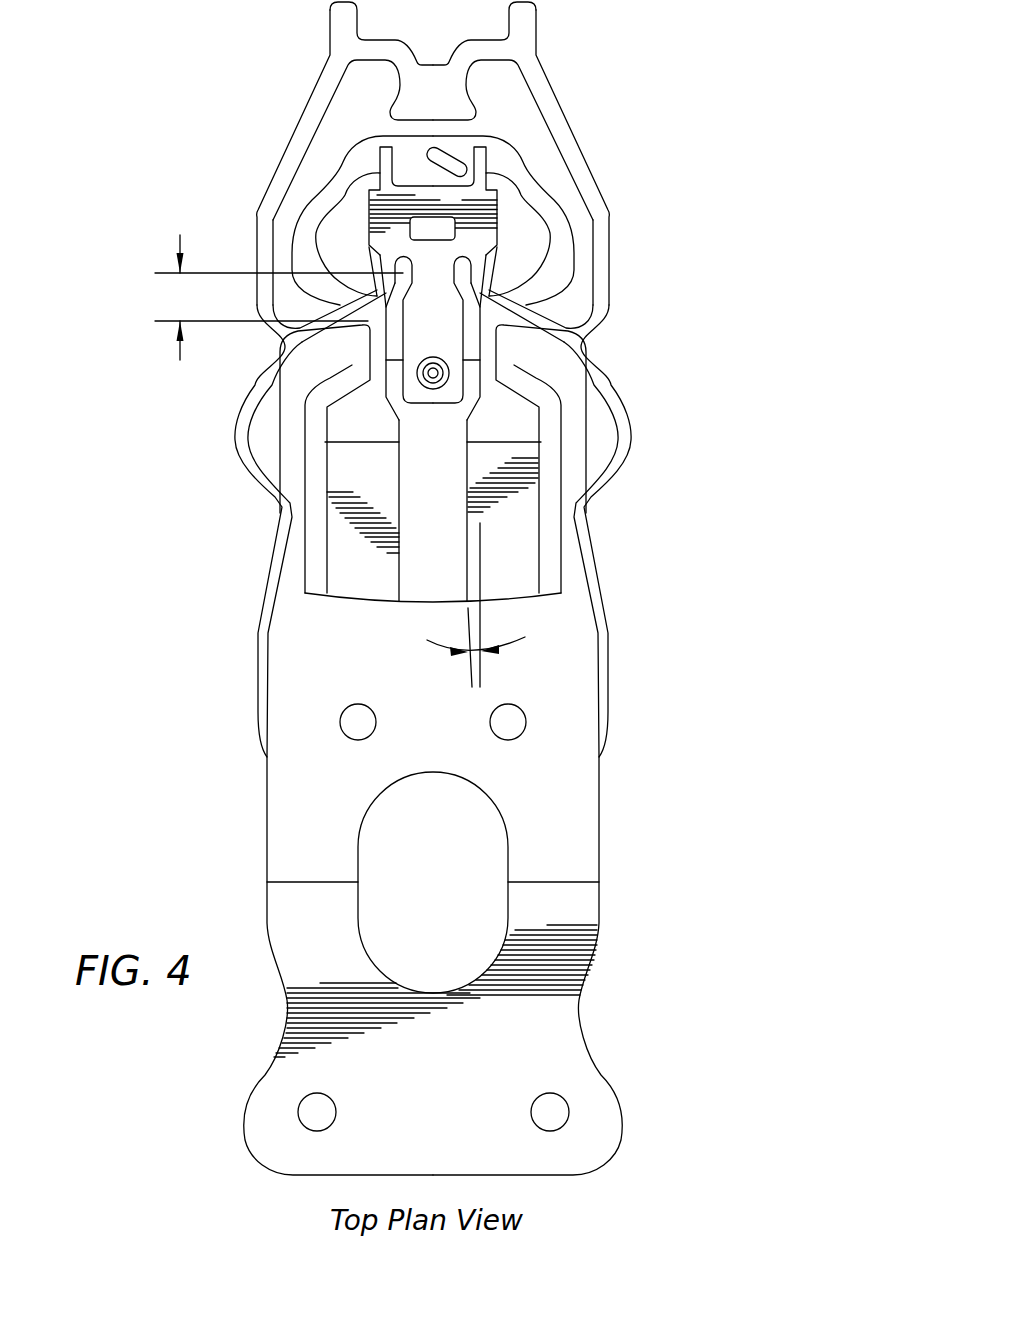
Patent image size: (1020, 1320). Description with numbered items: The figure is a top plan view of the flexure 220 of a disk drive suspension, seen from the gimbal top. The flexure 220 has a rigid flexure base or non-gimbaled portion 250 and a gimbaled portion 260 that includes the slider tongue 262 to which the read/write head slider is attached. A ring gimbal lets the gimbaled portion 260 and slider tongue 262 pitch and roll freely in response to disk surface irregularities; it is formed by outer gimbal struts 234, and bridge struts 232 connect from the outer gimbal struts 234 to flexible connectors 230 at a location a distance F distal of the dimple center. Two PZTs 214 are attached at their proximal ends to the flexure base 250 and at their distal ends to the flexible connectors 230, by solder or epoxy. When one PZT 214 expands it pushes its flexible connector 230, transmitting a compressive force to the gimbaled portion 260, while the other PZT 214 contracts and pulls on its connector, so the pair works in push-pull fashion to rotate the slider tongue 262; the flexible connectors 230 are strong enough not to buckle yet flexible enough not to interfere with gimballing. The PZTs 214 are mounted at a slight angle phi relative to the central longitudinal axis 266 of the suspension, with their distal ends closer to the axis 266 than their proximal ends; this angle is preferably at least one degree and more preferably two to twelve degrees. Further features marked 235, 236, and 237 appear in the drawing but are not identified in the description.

The PZT 214 is at (533, 543).
The flexure 220 is at (241, 523).
The flexible connectors 230 is at (372, 378).
The bridge struts 232 is at (521, 307).
The outer gimbal struts 234 is at (580, 175).
The channel wall 235 is at (508, 428).
The brace 236 is at (506, 397).
The inner wall 237 is at (490, 283).
The non-gimbaled flexure base 250 is at (265, 822).
The gimbaled portion 260 is at (133, 122).
The slider tongue 262 is at (383, 206).
The central longitudinal axis 266 is at (480, 670).